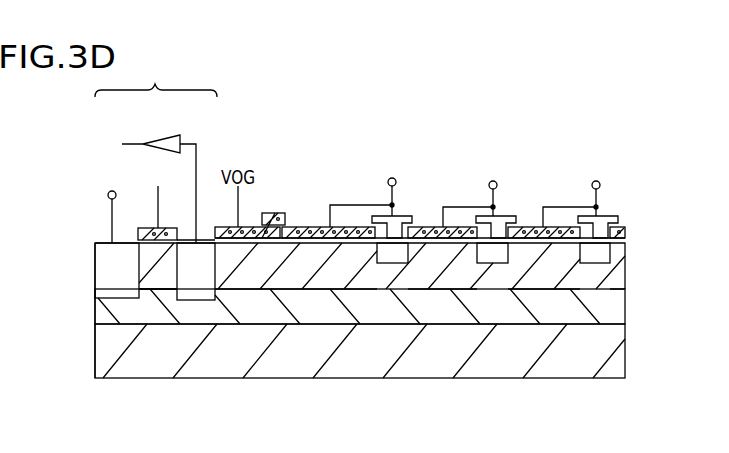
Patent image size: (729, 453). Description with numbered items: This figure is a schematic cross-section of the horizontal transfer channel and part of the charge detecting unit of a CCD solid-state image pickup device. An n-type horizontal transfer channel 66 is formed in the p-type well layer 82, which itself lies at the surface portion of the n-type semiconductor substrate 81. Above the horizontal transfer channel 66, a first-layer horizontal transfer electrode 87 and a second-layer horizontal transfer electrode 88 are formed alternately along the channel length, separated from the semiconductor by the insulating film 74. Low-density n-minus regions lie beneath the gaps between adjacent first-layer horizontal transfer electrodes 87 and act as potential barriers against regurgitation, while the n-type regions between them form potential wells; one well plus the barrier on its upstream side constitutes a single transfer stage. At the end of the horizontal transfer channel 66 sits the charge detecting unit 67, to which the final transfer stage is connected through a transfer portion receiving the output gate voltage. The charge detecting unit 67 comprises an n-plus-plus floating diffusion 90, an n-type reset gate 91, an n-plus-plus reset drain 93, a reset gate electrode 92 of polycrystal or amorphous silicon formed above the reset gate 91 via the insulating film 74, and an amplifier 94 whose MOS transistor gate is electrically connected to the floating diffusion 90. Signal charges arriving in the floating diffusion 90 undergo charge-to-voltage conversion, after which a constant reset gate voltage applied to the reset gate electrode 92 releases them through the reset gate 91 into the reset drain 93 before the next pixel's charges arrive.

The charge detecting unit 67 is at (199, 0).
The amplifier 94 is at (162, 135).
The insulating film 74 is at (626, 241).
The reset gate electrode 92 is at (165, 228).
The floating diffusion 90 is at (197, 292).
The reset gate 91 is at (162, 278).
The reset drain 93 is at (125, 290).
The horizontal transfer channel 66 is at (626, 268).
The p-type well layer 82 is at (626, 309).
The n-type semiconductor substrate 81 is at (626, 357).
The first-layer horizontal transfer electrode 87 is at (627, 227).
The second-layer horizontal transfer electrode 88 is at (607, 217).